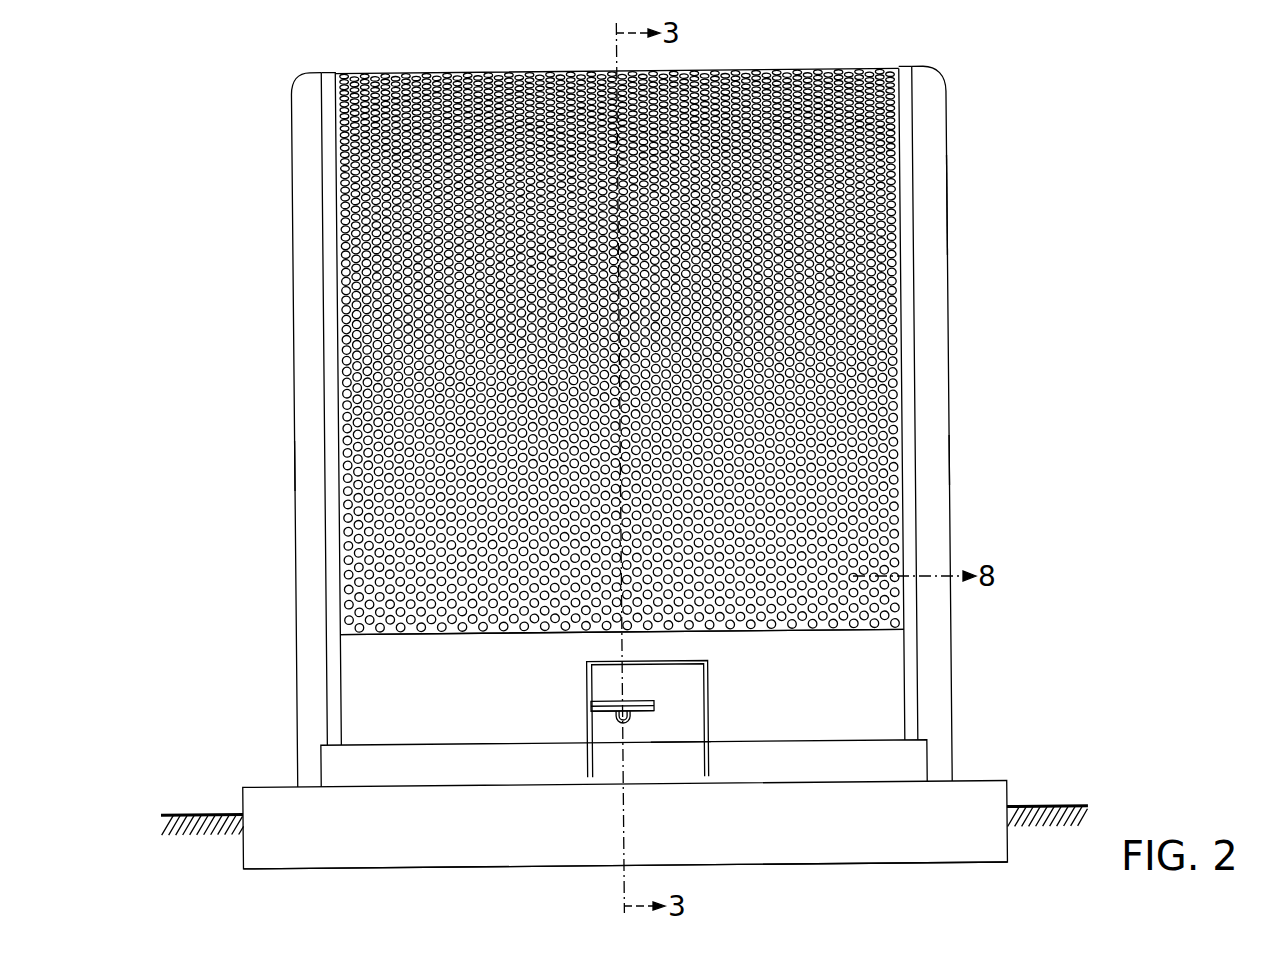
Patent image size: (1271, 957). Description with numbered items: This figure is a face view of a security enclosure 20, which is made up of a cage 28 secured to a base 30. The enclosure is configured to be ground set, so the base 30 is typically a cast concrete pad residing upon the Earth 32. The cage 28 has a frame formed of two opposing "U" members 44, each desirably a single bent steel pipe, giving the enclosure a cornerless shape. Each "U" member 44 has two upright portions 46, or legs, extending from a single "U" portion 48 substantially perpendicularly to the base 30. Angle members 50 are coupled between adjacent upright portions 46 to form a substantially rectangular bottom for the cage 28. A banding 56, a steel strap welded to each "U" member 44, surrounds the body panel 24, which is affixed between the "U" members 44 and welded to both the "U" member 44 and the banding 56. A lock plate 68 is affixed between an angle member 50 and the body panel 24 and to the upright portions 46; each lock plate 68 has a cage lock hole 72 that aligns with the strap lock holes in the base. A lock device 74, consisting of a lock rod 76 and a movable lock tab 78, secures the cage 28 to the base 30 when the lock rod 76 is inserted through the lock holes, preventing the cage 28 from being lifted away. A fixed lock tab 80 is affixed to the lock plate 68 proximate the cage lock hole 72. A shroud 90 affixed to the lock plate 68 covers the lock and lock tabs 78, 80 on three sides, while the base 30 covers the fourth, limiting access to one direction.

The security enclosure 20 is at (1134, 669).
The body panel 24 is at (867, 396).
The cage 28 is at (1052, 211).
The base 30 is at (252, 790).
The Earth 32 is at (166, 806).
The "U" member 44 is at (291, 330).
The upright portion 46 is at (291, 458).
The "U" portion 48 is at (291, 138).
The angle member 50 is at (873, 755).
The banding 56 is at (323, 232).
The lock plate 68 is at (873, 671).
The cage lock hole 72 is at (650, 712).
The lock device 74 is at (583, 703).
The lock rod 76 is at (600, 708).
The lock tab 78 is at (583, 698).
The lock tab 80 is at (583, 693).
The shroud 90 is at (579, 658).